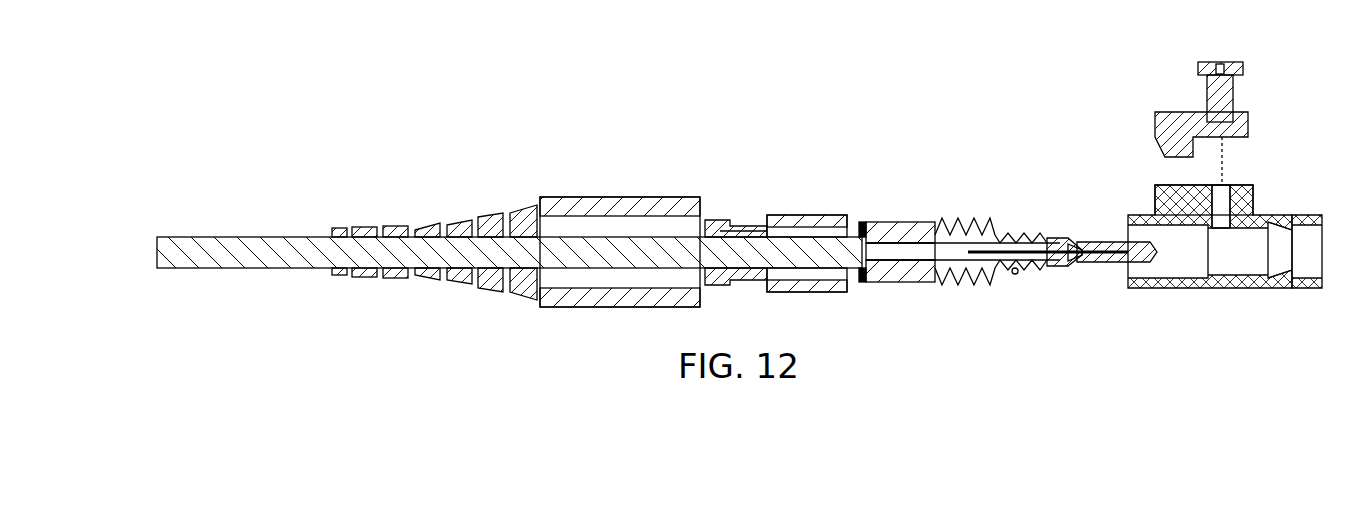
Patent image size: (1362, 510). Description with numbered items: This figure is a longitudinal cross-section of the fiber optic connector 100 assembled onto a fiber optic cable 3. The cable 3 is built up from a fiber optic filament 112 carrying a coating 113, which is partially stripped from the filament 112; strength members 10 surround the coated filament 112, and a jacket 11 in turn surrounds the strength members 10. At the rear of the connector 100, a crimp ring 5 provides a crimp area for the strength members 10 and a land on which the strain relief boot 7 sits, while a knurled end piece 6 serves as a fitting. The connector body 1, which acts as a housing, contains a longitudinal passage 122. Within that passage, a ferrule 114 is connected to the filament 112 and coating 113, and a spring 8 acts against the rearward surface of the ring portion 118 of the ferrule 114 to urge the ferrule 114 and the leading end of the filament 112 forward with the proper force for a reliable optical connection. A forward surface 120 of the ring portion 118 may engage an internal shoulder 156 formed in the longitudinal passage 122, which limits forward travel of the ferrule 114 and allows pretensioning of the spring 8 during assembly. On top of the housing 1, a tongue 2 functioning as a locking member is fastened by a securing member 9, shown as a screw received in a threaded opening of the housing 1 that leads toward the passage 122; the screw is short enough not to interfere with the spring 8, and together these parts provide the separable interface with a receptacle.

The connector body 1 is at (1160, 210).
The tongue 2 is at (1170, 122).
The fiber optic cable 3 is at (615, 245).
The crimp ring 5 is at (818, 218).
The knurled end piece 6 is at (920, 228).
The strain relief boot 7 is at (638, 207).
The spring 8 is at (1015, 274).
The securing member 9 is at (1220, 97).
The strength members 10 is at (863, 232).
The jacket 11 is at (748, 243).
The fiber optic connector 100 is at (989, 142).
The fiber optic filament 112 is at (1025, 255).
The coating 113 is at (891, 252).
The ferrule 114 is at (1055, 262).
The ring portion 118 is at (1058, 240).
The forward surface 120 is at (1073, 240).
The longitudinal passage 122 is at (1180, 268).
The internal shoulder 156 is at (1282, 270).